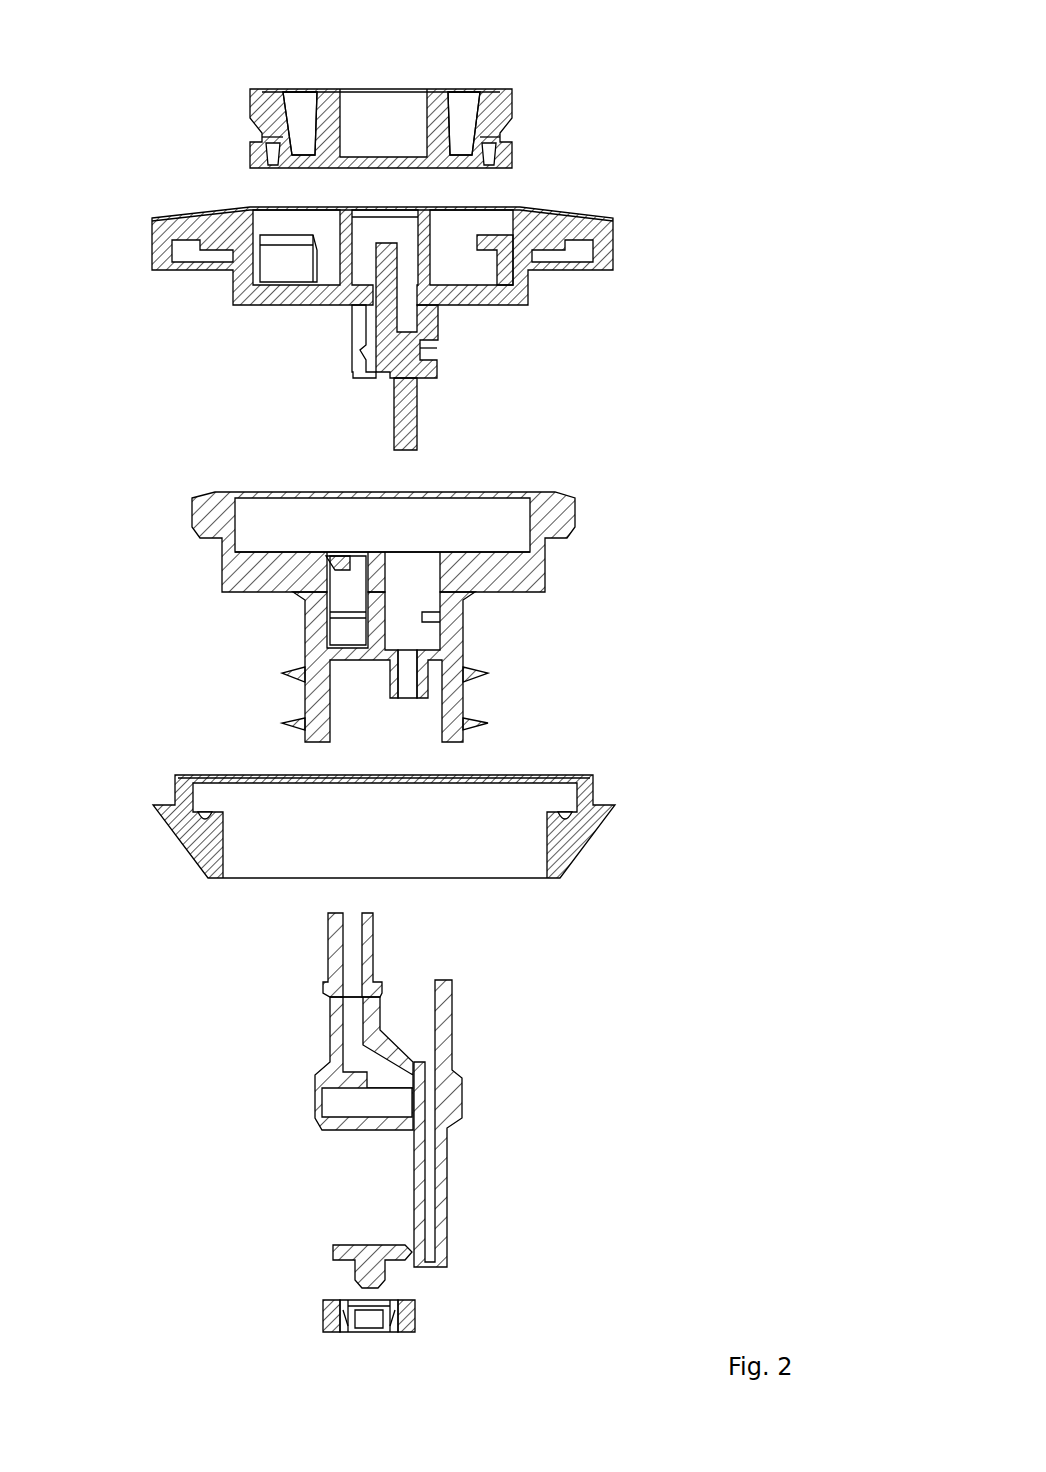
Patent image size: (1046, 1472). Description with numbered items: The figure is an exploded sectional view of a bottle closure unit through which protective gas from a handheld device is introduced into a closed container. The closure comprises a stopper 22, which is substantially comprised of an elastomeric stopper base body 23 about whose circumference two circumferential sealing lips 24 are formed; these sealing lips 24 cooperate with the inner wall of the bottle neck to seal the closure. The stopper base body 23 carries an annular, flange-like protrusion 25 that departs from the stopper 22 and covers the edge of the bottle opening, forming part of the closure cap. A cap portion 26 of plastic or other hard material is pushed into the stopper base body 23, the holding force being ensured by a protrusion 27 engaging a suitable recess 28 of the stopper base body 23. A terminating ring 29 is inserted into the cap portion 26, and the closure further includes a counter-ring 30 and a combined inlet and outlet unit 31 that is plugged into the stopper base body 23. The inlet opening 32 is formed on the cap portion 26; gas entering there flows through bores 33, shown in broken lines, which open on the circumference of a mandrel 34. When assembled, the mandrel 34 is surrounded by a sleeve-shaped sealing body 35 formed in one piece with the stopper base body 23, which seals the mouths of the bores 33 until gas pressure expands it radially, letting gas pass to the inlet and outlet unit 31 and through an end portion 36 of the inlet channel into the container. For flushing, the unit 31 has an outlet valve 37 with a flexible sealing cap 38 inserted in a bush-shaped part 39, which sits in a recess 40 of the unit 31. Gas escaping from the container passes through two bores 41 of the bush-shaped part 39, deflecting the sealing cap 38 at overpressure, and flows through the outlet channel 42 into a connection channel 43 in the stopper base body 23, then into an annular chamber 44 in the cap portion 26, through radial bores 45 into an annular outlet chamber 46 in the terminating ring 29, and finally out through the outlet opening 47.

The stopper 22 is at (513, 662).
The stopper base body 23 is at (313, 623).
The circumferential sealing lips 24 is at (283, 725).
The annular, flange-like protrusion 25 is at (530, 570).
The cap portion 26 is at (590, 227).
The protrusion 27 is at (433, 360).
The recess 28 is at (430, 622).
The terminating ring 29 is at (512, 107).
The counter-ring 30 is at (578, 846).
The combined inlet and outlet unit 31 is at (452, 1085).
The inlet opening 32 is at (347, 207).
The bores 33 is at (378, 352).
The mandrel 34 is at (408, 415).
The sleeve-shaped sealing body 35 is at (395, 688).
The end portion of the inlet channel 36 is at (442, 1147).
The outlet valve 37 is at (285, 1305).
The flexible sealing cap 38 is at (345, 1252).
The bush-shaped part 39 is at (408, 1313).
The recess 40 is at (332, 1104).
The bores 41 is at (387, 1322).
The outlet channel 42 is at (352, 943).
The connection channel 43 is at (327, 565).
The annular chamber 44 is at (282, 248).
The radial bores 45 is at (263, 138).
The annular outlet chamber 46 is at (300, 103).
The outlet opening 47 is at (273, 92).